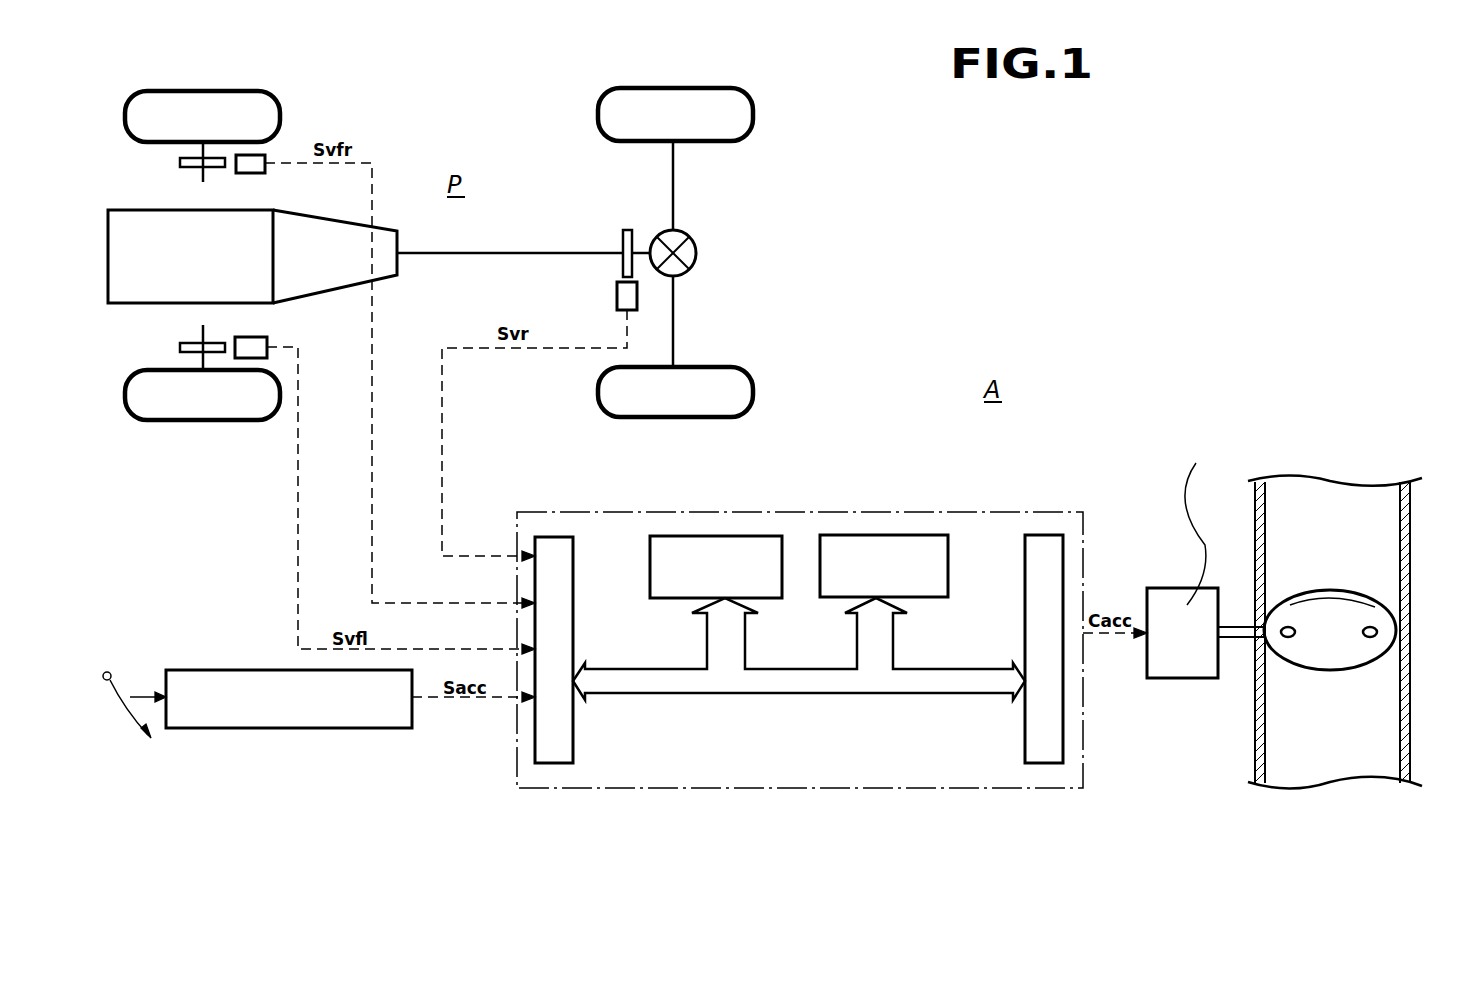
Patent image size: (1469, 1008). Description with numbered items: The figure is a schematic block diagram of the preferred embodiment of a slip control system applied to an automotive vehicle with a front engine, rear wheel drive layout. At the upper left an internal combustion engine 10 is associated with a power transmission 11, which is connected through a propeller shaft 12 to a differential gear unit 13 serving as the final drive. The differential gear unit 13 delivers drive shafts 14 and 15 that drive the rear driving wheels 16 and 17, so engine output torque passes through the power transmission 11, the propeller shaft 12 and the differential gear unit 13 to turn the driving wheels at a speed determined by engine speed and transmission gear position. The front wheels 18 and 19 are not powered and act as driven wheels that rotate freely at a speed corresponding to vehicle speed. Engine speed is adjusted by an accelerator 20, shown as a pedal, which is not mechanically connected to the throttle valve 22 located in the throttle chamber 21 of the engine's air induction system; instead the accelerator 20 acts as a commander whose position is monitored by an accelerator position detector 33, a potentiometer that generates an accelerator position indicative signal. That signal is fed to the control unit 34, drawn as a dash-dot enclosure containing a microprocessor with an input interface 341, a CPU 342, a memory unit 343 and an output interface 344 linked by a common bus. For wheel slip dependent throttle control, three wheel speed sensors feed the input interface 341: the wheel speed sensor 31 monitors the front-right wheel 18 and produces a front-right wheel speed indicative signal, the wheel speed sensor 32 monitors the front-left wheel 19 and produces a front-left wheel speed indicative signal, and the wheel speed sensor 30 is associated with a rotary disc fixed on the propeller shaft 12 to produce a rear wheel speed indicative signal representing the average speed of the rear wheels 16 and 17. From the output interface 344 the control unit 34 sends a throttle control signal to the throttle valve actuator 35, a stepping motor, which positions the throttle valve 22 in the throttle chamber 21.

The internal combustion engine 10 is at (236, 210).
The power transmission 11 is at (321, 218).
The propeller shaft 12 is at (545, 253).
The differential gear unit 13 is at (697, 253).
The drive shaft 14 is at (673, 203).
The drive shaft 15 is at (673, 327).
The driving wheel 16 is at (753, 115).
The driving wheel 17 is at (753, 395).
The front wheel 18 is at (125, 119).
The front wheel 19 is at (125, 402).
The accelerator 20 is at (118, 690).
The throttle chamber 21 is at (1410, 547).
The throttle valve 22 is at (1367, 620).
The wheel speed sensor 30 is at (617, 296).
The wheel speed sensor 31 is at (268, 158).
The wheel speed sensor 32 is at (250, 337).
The accelerator position detector 33 is at (228, 670).
The control unit 34 is at (800, 602).
The throttle valve actuator 35 is at (1172, 588).
The input interface 341 is at (549, 537).
The CPU 342 is at (703, 536).
The memory unit 343 is at (868, 535).
The output interface 344 is at (1035, 535).